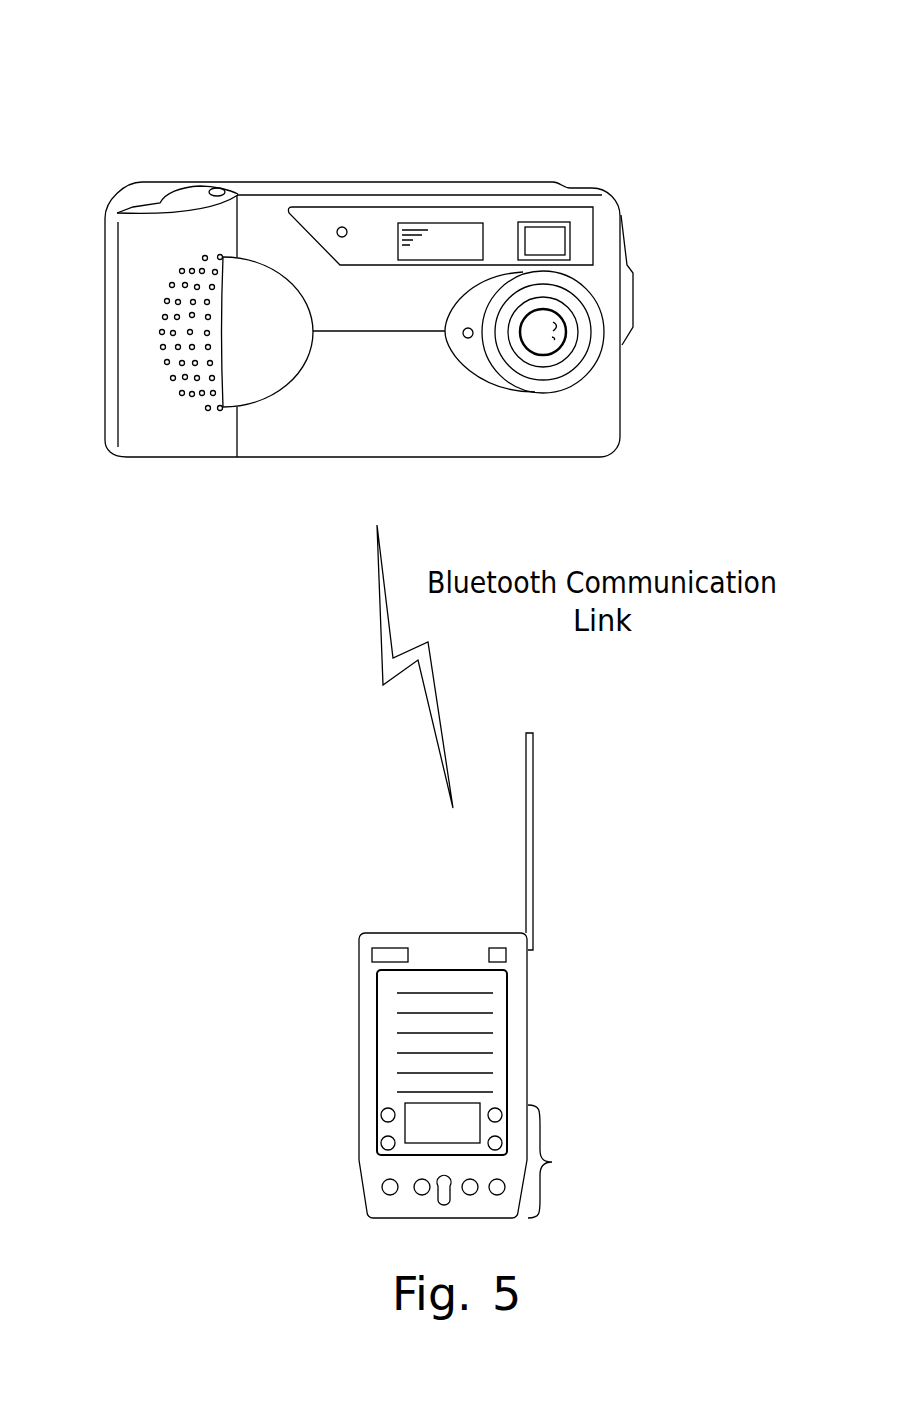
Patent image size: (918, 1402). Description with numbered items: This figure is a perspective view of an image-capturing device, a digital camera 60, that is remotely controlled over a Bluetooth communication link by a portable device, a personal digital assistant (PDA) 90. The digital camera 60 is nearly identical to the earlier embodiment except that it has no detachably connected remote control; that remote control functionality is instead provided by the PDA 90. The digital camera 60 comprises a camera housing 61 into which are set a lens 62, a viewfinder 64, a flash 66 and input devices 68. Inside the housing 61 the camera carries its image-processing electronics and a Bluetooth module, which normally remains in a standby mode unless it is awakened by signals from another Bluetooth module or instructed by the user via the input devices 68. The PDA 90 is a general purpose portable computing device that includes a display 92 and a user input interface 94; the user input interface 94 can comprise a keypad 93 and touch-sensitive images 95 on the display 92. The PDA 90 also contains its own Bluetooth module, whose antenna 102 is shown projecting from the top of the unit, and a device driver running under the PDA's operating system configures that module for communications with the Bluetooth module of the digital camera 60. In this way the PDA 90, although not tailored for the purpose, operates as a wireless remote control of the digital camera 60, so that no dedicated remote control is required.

The digital camera 60 is at (407, 278).
The camera housing 61 is at (335, 435).
The lens 62 is at (563, 333).
The viewfinder 64 is at (552, 240).
The flash 66 is at (437, 248).
The input devices 68 is at (188, 175).
The personal digital assistant (PDA) 90 is at (426, 975).
The display 92 is at (478, 1065).
The keypad 93 is at (385, 1182).
The user input interface 94 is at (564, 1161).
The touch-sensitive images 95 is at (383, 1110).
The antenna 102 is at (533, 867).